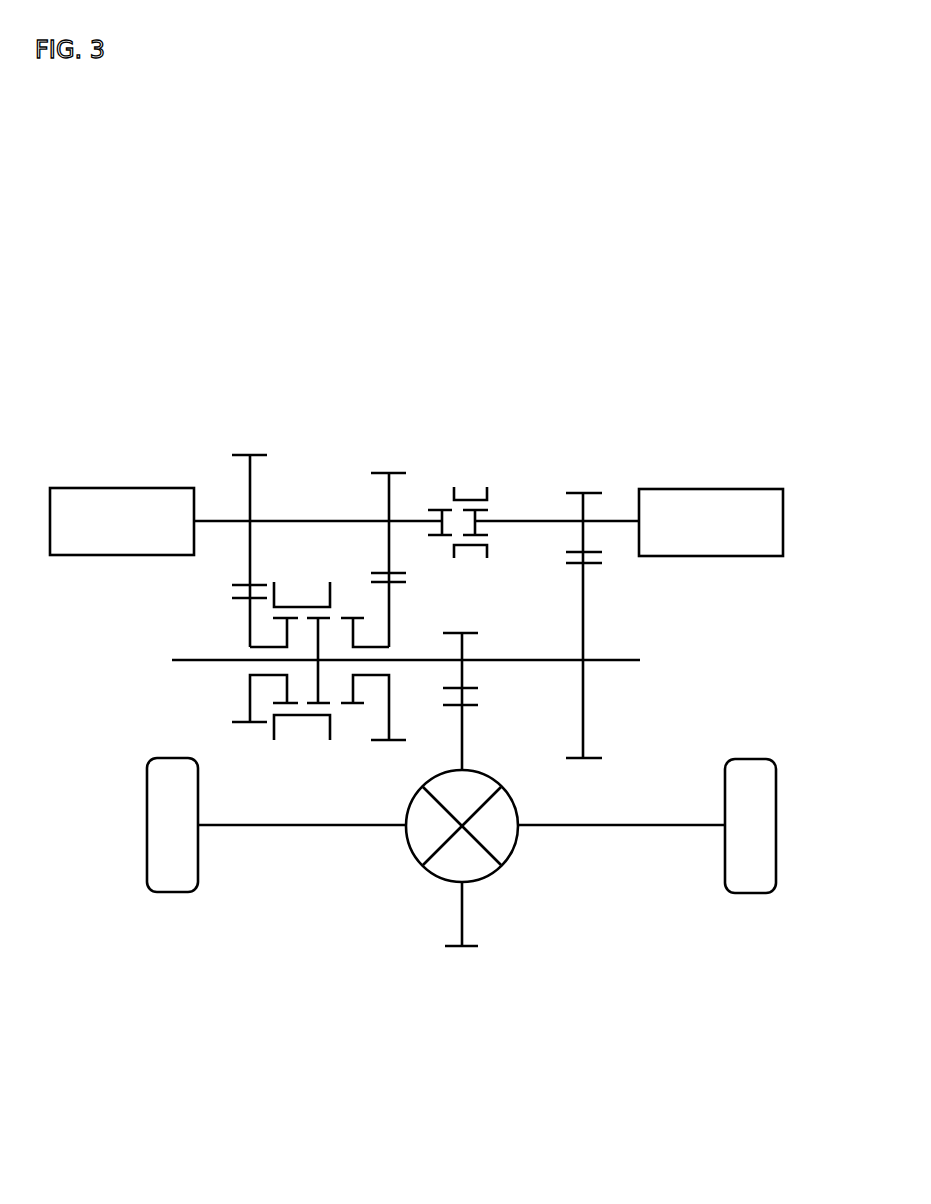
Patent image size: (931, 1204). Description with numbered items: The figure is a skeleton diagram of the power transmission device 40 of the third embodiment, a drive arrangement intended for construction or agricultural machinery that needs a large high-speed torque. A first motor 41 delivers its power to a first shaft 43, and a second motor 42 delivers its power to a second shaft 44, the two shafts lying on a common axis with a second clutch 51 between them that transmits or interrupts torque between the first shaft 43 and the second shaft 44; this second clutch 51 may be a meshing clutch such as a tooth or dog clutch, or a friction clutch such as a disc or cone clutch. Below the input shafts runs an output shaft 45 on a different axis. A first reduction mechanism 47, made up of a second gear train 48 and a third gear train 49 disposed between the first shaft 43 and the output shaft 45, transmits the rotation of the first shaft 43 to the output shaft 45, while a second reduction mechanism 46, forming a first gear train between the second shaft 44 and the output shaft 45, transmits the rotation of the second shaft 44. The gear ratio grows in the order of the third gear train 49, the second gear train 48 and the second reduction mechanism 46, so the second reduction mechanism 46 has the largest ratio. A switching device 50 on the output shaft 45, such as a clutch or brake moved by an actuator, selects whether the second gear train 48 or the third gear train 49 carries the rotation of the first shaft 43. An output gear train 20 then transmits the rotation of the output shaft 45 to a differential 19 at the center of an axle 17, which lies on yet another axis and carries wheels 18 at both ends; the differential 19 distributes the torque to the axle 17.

The power transmission device 40 is at (640, 330).
The first motor 41 is at (126, 498).
The second motor 42 is at (722, 500).
The first shaft 43 is at (225, 520).
The second shaft 44 is at (605, 518).
The output shaft 45 is at (190, 660).
The second reduction mechanism 46 is at (593, 474).
The first reduction mechanism 47 is at (247, 360).
The second gear train 48 is at (397, 432).
The third gear train 49 is at (262, 432).
The switching device 50 is at (312, 742).
The second clutch 51 is at (477, 467).
The axle 17 is at (322, 826).
The wheels 18 is at (174, 878).
The differential 19 is at (500, 843).
The output gear train 20 is at (470, 968).